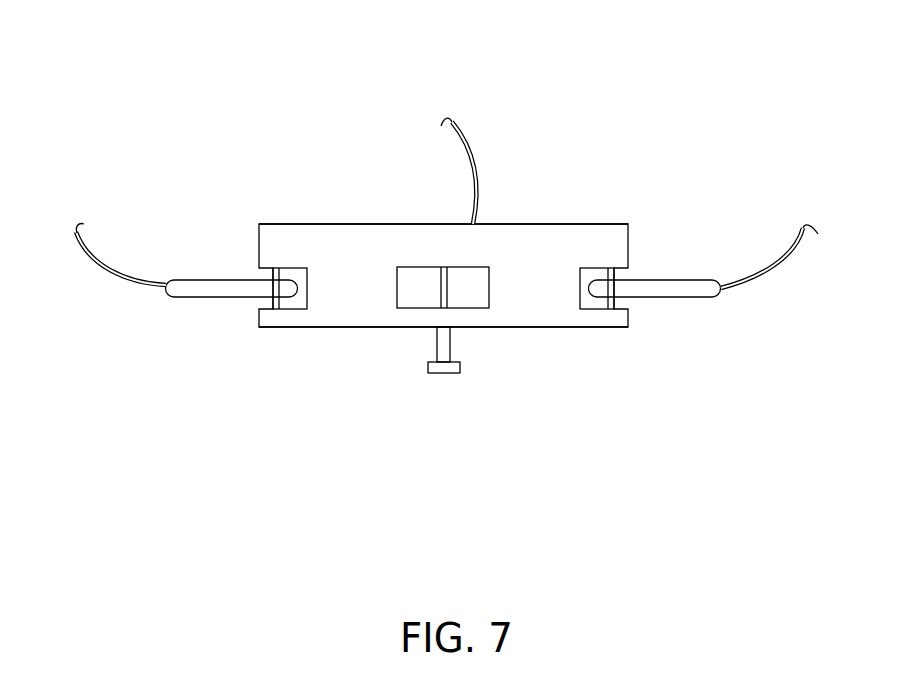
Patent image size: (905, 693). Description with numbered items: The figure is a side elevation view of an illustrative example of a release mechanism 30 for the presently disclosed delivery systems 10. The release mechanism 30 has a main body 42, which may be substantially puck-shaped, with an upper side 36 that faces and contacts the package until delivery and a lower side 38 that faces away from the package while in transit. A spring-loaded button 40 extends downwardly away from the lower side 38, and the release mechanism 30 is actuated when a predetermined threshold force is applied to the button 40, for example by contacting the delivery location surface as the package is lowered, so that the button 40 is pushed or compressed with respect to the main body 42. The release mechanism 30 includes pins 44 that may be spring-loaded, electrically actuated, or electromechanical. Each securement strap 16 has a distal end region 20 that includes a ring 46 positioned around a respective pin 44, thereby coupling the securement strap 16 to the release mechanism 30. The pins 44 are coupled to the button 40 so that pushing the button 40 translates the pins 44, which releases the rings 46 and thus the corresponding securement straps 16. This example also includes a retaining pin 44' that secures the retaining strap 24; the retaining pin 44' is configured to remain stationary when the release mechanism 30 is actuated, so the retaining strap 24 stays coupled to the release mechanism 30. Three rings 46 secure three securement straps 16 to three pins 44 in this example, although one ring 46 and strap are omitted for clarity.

The delivery system 10 is at (828, 58).
The securement strap 16 is at (81, 250).
The distal end region 20 is at (158, 296).
The retaining strap 24 is at (469, 155).
The release mechanism 30 is at (746, 122).
The upper side 36 is at (533, 224).
The lower side 38 is at (316, 328).
The button 40 is at (460, 367).
The main body 42 is at (271, 224).
The pin 44 is at (447, 302).
The retaining pin 44' is at (419, 195).
The ring 46 is at (210, 298).